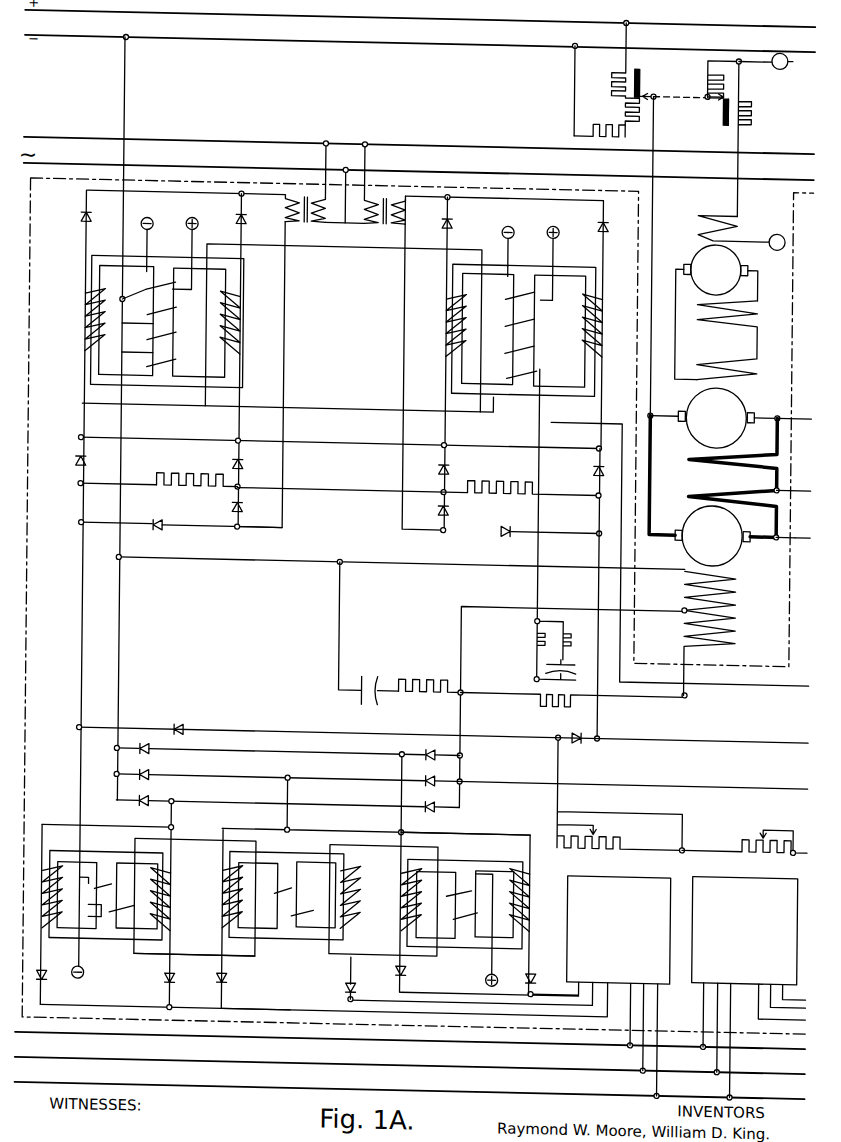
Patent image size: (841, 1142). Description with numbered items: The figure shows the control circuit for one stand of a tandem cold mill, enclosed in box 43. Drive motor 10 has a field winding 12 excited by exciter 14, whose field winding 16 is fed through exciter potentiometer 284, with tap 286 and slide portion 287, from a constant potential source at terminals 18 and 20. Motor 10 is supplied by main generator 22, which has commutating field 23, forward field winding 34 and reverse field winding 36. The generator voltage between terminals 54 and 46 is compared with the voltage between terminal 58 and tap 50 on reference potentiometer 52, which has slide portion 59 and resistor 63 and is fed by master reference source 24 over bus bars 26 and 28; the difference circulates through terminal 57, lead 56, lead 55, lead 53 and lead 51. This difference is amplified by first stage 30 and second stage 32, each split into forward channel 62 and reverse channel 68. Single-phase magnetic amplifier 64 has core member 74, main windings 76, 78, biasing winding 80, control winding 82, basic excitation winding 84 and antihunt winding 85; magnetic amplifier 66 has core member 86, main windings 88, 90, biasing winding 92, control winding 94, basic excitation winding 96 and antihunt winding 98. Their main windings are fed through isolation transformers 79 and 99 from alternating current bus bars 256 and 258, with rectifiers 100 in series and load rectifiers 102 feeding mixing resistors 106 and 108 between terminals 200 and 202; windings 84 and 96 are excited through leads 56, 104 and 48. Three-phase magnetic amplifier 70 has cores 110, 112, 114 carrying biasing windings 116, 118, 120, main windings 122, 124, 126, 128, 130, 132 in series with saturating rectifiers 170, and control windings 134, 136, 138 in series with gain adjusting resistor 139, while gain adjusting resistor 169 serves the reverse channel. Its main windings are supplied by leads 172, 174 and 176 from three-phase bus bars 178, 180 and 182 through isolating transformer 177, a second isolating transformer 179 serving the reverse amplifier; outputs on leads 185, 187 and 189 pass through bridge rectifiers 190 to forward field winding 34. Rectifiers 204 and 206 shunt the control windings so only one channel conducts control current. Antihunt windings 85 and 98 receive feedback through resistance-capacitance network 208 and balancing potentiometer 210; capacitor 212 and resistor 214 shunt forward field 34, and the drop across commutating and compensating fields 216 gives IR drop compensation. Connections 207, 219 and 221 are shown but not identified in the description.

The drive motor 10 is at (742, 400).
The field winding 12 is at (744, 360).
The exciter 14 is at (706, 275).
The field winding 16 is at (734, 216).
The terminal 18 is at (776, 61).
The terminal 20 is at (781, 237).
The main motor-supply generator 22 is at (690, 512).
The commutating field 23 is at (700, 486).
The adjustable master reference source 24 is at (329, 29).
The bus bar 26 is at (80, 13).
The bus bar 28 is at (90, 38).
The first stage of magnetic amplifiers 30 is at (340, 336).
The second stage of magnetic amplifiers 32 is at (514, 823).
The forward field winding 34 is at (742, 580).
The reverse field winding 36 is at (742, 632).
The box 43 is at (32, 644).
The terminal 46 is at (663, 428).
The lead 48 is at (654, 226).
The tap 50 is at (687, 91).
The lead 51 is at (798, 524).
The reference potentiometer 52 is at (620, 103).
The lead 53 is at (792, 671).
The terminal 54 is at (777, 549).
The lead 55 is at (372, 404).
The lead 56 is at (125, 107).
The terminal 57 is at (126, 29).
The terminal 58 is at (575, 80).
The slide portion 59 is at (640, 76).
The forward channel 62 is at (178, 214).
The resistor 63 is at (590, 135).
The single-phase magnetic amplifier 64 is at (170, 409).
The single-phase magnetic amplifier 66 is at (530, 425).
The reverse channel 68 is at (540, 215).
The three-phase magnetic amplifier 70 is at (285, 989).
The core member 74 is at (171, 275).
The main winding 76 is at (86, 330).
The main winding 78 is at (240, 341).
The isolation transformer 79 is at (317, 196).
The biasing winding 80 is at (147, 316).
The control winding 82 is at (172, 338).
The basic excitation winding 84 is at (172, 313).
The antihunt winding 85 is at (172, 363).
The core member 86 is at (521, 280).
The main winding 88 is at (449, 325).
The main winding 90 is at (604, 326).
The biasing winding 92 is at (508, 291).
The control winding 94 is at (508, 348).
The basic excitation winding 96 is at (508, 321).
The antihunt winding 98 is at (521, 385).
The isolation transformer 99 is at (375, 196).
The rectifiers 100 is at (606, 212).
The load rectifiers 102 is at (508, 528).
The lead 104 is at (343, 244).
The mixing resistor 106 is at (190, 476).
The mixing resistor 108 is at (496, 490).
The core 110 is at (110, 939).
The core 112 is at (292, 940).
The core 114 is at (462, 941).
The biasing winding 116 is at (118, 905).
The biasing winding 118 is at (306, 910).
The biasing winding 120 is at (480, 909).
The main winding 122 is at (58, 914).
The main winding 124 is at (175, 890).
The main winding 126 is at (229, 903).
The main winding 128 is at (383, 923).
The main winding 130 is at (408, 903).
The main winding 132 is at (535, 890).
The control winding 134 is at (87, 887).
The control winding 136 is at (269, 891).
The control winding 138 is at (445, 890).
The gain adjusting resistor 139 is at (615, 836).
The gain adjusting resistor 169 is at (752, 836).
The saturating rectifiers 170 is at (228, 983).
The lead 172 is at (138, 1006).
The lead 174 is at (300, 1003).
The lead 176 is at (490, 995).
The isolating transformer 177 is at (509, 983).
The isolating transformer 179 is at (749, 988).
The bus bar 178 is at (117, 1035).
The bus bar 180 is at (27, 1059).
The bus bar 182 is at (27, 1085).
The lead 185 is at (235, 803).
The lead 187 is at (246, 776).
The lead 189 is at (332, 750).
The rectifiers 190 is at (445, 802).
The terminal 200 is at (96, 484).
The terminal 202 is at (578, 593).
The rectifier 204 is at (196, 718).
The rectifier 206 is at (578, 728).
The conductor 207 is at (276, 558).
The resistance-capacitance network 208 is at (530, 635).
The balancing potentiometer 210 is at (544, 706).
The capacitor 212 is at (370, 670).
The resistor 214 is at (430, 672).
The motor commutating and compensating fields 216 is at (706, 451).
The conductor 219 is at (799, 408).
The conductor 221 is at (798, 501).
The alternating current bus bar 256 is at (172, 140).
The alternating current bus bar 258 is at (172, 166).
The exciter potentiometer 284 is at (775, 90).
The adjustable tap 286 is at (723, 95).
The slide portion 287 is at (725, 113).